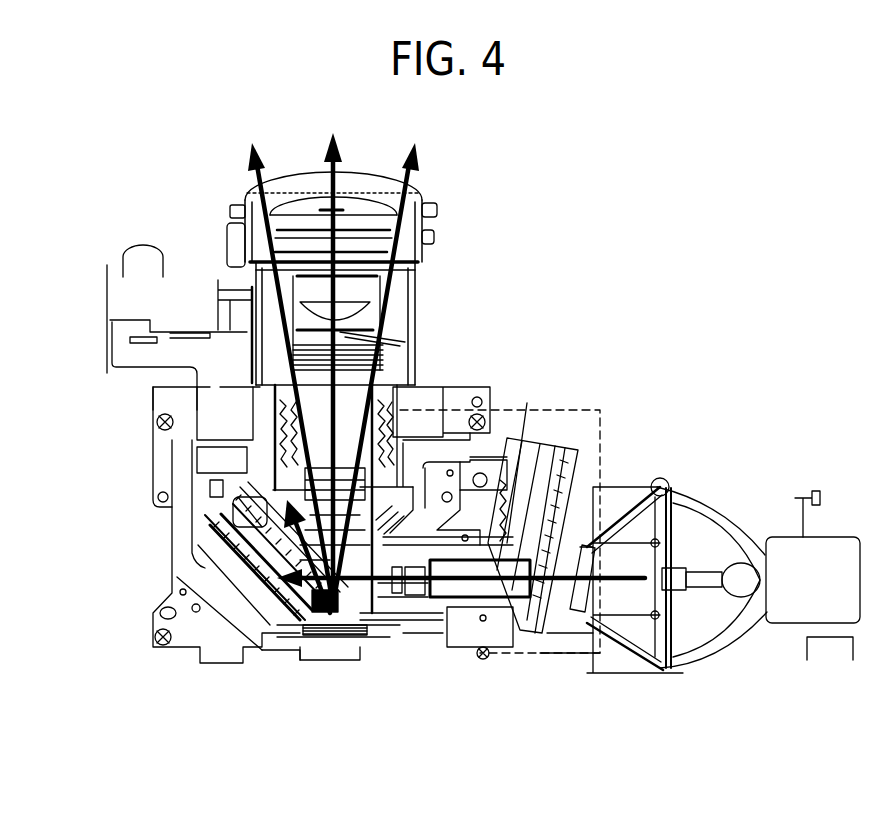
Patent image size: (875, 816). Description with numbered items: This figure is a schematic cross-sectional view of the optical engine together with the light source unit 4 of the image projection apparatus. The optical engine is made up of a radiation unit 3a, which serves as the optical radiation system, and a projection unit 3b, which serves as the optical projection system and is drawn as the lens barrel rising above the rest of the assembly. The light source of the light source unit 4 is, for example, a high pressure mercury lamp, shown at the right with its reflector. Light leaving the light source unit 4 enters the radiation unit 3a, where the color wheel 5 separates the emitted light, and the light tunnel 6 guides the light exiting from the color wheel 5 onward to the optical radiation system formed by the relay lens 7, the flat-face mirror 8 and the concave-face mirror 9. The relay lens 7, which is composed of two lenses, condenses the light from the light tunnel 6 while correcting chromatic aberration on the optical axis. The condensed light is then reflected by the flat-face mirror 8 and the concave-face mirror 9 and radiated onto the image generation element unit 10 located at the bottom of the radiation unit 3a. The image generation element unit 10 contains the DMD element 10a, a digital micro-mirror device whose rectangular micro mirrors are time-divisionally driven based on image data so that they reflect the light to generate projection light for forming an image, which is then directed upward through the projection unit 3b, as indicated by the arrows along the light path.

The radiation unit 3a is at (138, 444).
The projection unit 3b is at (410, 333).
The light source unit 4 is at (732, 640).
The color wheel 5 is at (582, 462).
The light tunnel 6 is at (488, 585).
The relay lens 7 is at (383, 585).
The flat-face mirror 8 is at (273, 572).
The concave-face mirror 9 is at (247, 518).
The image generation element unit 10 is at (340, 663).
The DMD element 10a is at (335, 630).